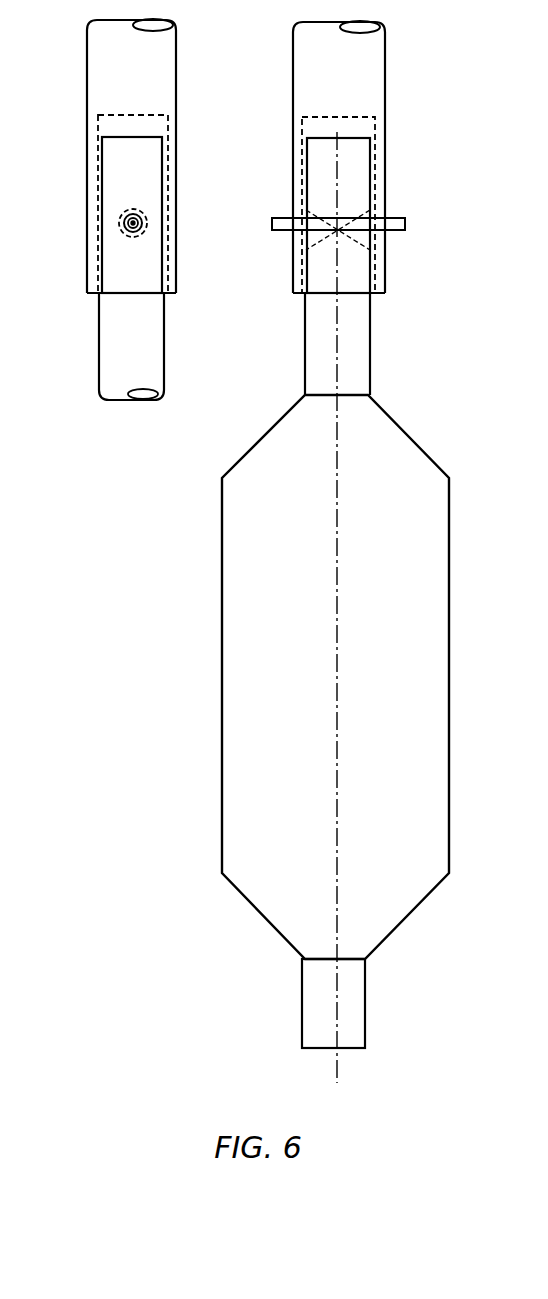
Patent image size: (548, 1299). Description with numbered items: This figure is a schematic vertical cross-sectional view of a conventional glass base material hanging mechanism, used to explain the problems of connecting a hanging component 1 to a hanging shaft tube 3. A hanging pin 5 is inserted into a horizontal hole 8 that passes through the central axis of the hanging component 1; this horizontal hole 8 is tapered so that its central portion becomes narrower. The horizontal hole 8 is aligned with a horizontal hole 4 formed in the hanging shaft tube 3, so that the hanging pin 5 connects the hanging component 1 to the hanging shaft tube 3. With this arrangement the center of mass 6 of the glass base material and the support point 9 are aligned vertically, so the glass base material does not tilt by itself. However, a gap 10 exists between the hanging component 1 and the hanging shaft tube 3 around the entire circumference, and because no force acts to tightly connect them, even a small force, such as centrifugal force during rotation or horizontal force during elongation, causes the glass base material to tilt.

The hanging component 1 is at (130, 147).
The hanging shaft tube 3 is at (322, 70).
The horizontal hole 4 is at (337, 220).
The hanging pin 5 is at (308, 212).
The center of mass 6 is at (336, 677).
The horizontal hole 8 is at (130, 222).
The support point 9 is at (339, 220).
The gap 10 is at (97, 293).